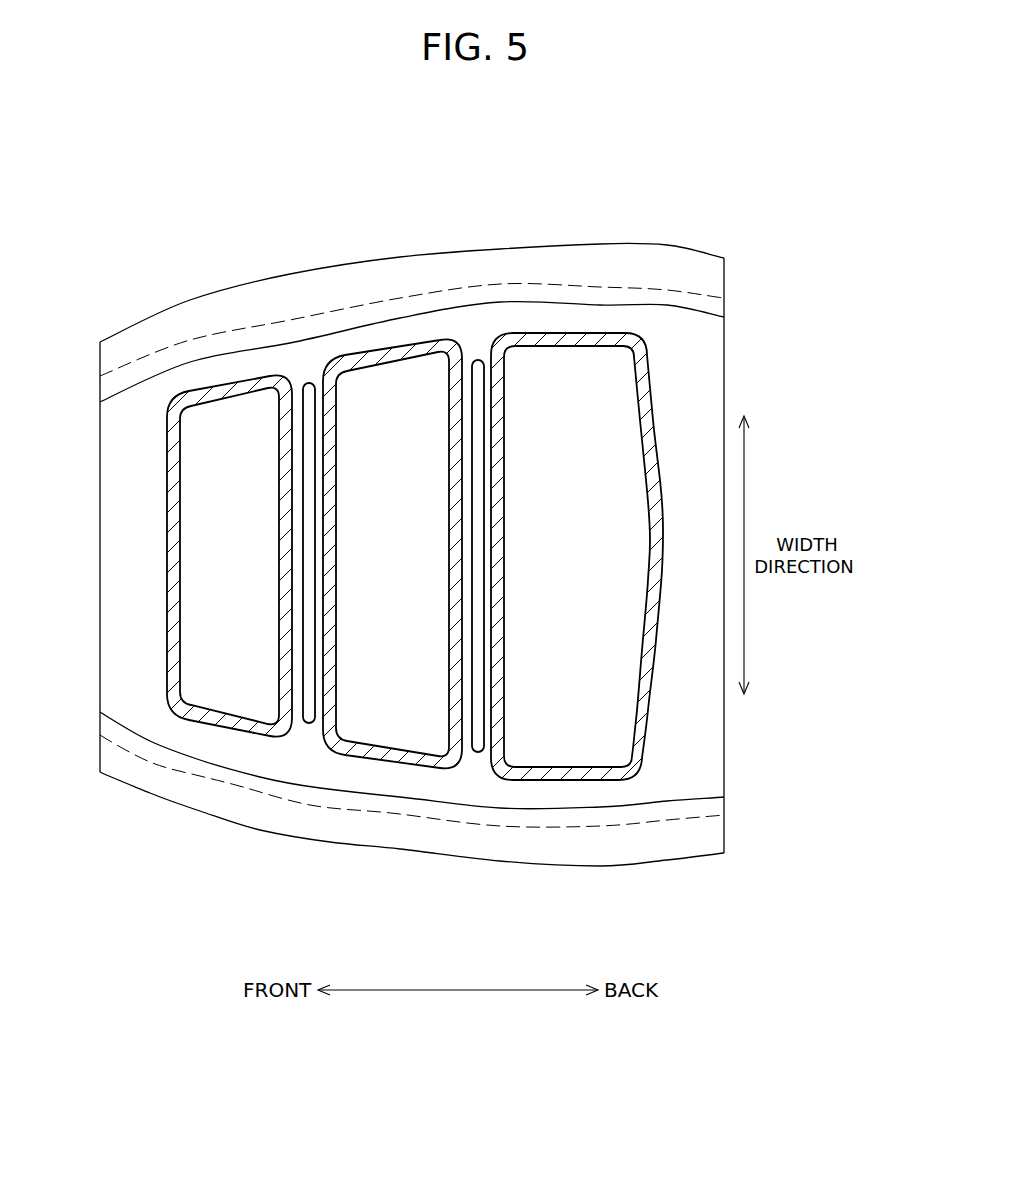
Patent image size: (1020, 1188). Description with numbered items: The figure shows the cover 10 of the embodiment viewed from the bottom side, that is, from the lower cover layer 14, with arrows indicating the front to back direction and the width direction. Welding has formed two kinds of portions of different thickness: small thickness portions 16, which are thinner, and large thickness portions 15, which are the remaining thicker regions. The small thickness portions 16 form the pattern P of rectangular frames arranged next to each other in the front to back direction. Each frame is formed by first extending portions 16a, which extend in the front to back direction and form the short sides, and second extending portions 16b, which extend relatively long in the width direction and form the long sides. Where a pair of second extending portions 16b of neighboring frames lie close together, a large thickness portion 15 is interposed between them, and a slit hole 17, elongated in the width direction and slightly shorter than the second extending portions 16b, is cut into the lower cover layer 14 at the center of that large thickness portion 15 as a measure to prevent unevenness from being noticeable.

The cover 10 is at (138, 808).
The lower cover layer 14 is at (272, 755).
The large thickness portion 15 is at (237, 700).
The small thickness portion 16 is at (408, 558).
The first extending portion 16a is at (233, 387).
The second extending portion 16b is at (170, 447).
The slit hole 17 is at (310, 725).
The pattern P is at (585, 300).